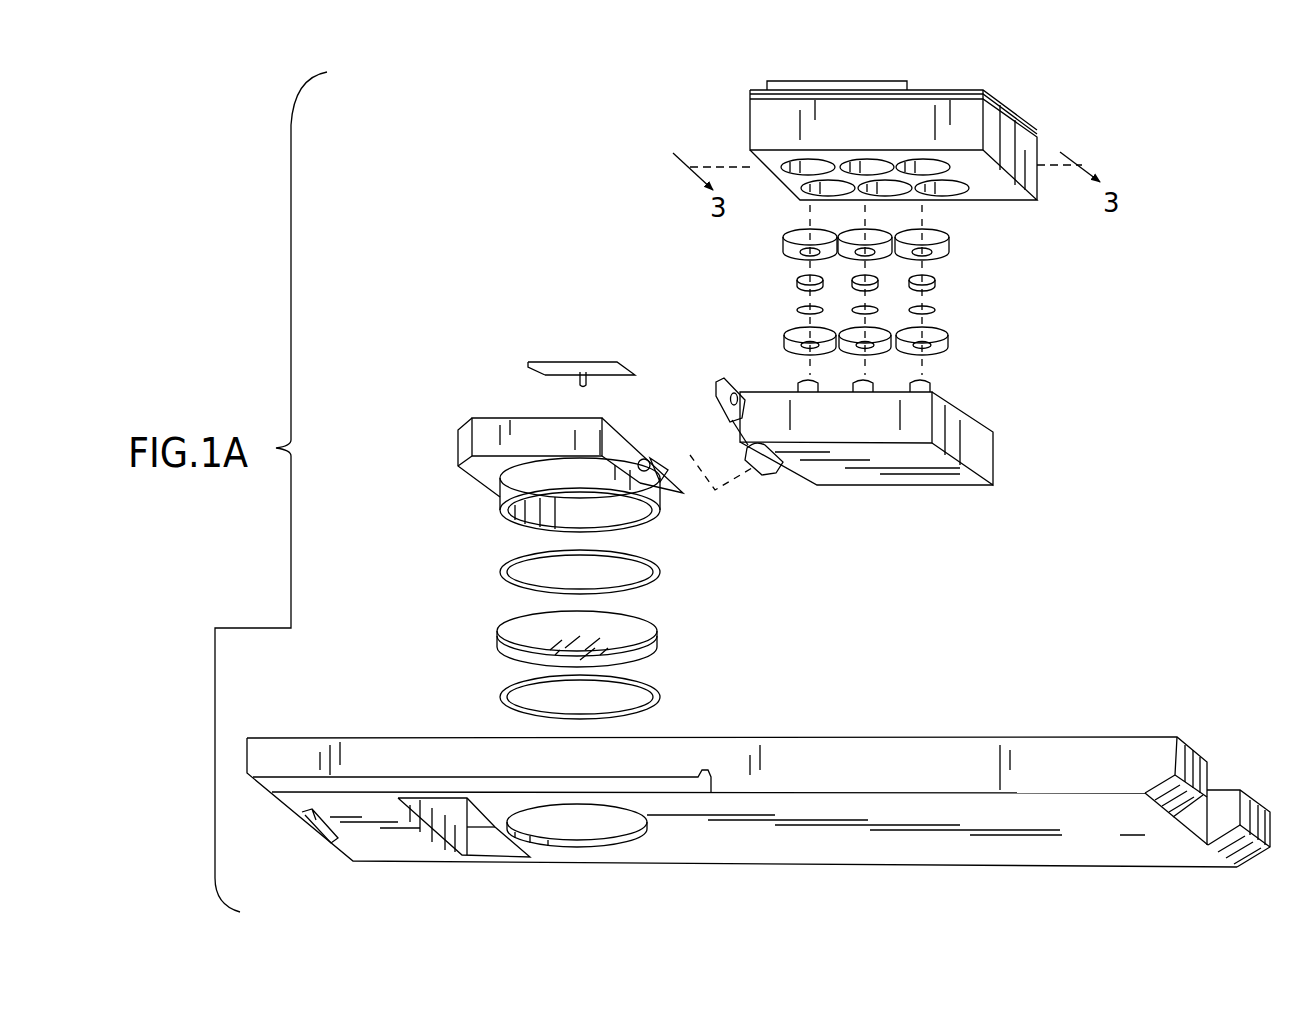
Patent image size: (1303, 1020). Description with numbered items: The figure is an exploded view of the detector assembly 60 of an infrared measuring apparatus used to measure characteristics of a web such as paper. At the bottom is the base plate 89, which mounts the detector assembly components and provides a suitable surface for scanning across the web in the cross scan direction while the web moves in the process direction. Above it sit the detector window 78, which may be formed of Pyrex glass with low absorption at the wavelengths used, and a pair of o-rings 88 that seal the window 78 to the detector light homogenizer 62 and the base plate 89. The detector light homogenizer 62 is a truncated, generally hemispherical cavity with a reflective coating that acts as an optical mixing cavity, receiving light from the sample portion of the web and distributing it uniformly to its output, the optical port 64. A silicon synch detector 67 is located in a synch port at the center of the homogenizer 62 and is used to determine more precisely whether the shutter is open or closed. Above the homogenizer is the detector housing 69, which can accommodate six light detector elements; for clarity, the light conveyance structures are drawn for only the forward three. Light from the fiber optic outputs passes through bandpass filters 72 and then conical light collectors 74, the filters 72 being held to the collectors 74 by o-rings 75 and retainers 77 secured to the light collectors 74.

The detector assembly 60 is at (1122, 335).
The detector housing 69 is at (760, 122).
The light collectors 74 is at (782, 241).
The bandpass filters 72 is at (786, 283).
The o-rings 75 is at (785, 311).
The retainers 77 is at (952, 340).
The silicon synch detector 67 is at (583, 384).
The optical port 64 is at (655, 468).
The detector light homogenizer 62 is at (650, 512).
The o-rings 88 is at (500, 572).
The detector window 78 is at (660, 637).
The base plate 89 is at (1045, 738).